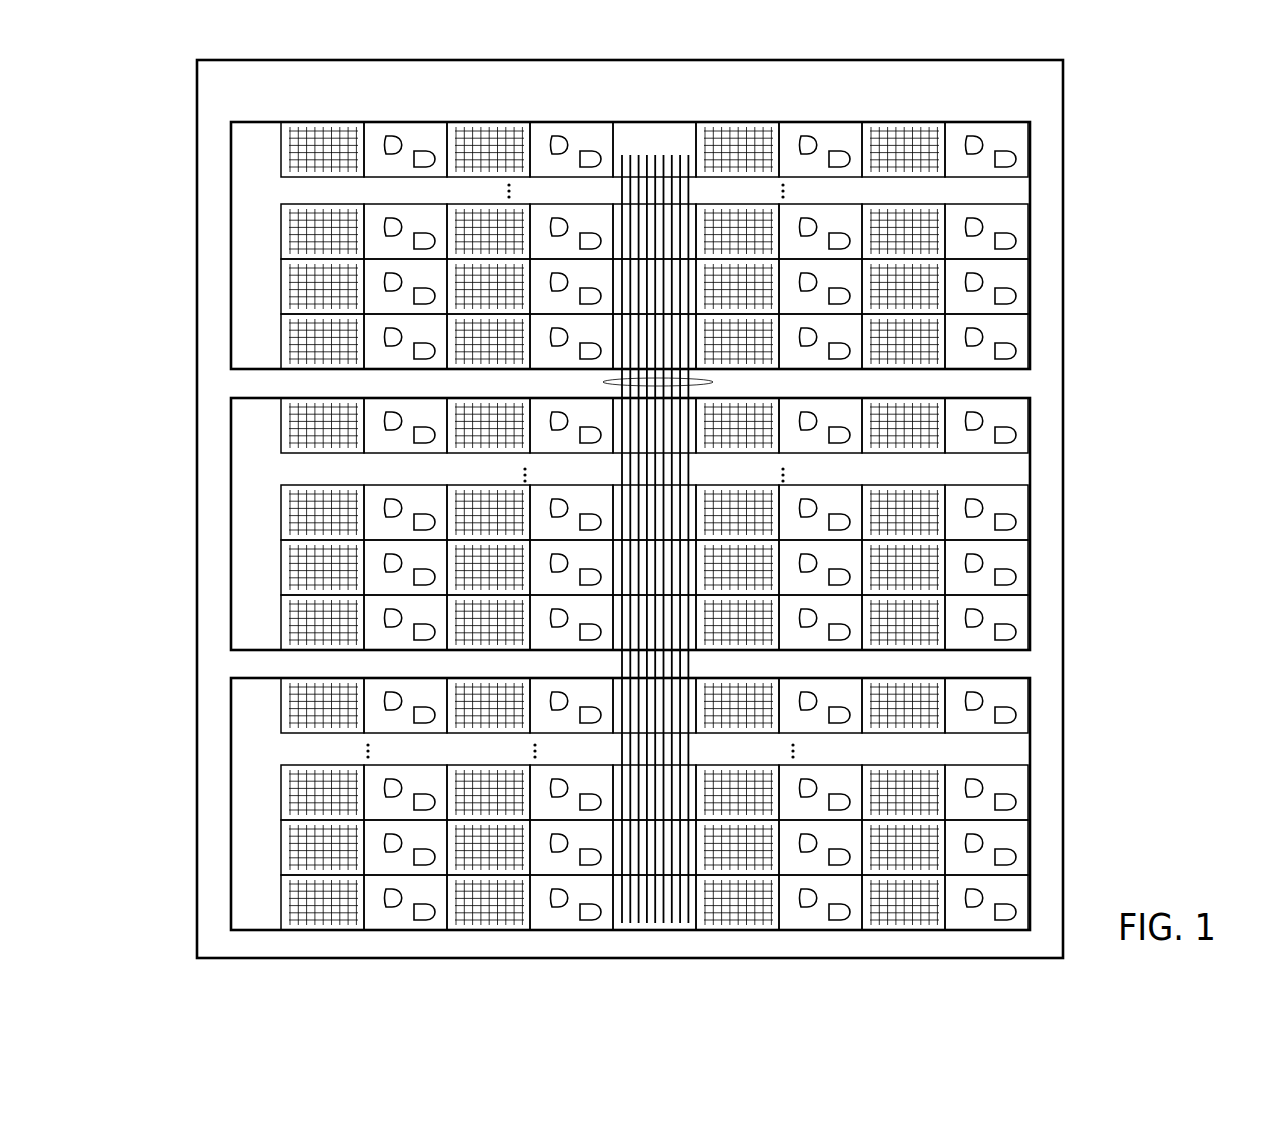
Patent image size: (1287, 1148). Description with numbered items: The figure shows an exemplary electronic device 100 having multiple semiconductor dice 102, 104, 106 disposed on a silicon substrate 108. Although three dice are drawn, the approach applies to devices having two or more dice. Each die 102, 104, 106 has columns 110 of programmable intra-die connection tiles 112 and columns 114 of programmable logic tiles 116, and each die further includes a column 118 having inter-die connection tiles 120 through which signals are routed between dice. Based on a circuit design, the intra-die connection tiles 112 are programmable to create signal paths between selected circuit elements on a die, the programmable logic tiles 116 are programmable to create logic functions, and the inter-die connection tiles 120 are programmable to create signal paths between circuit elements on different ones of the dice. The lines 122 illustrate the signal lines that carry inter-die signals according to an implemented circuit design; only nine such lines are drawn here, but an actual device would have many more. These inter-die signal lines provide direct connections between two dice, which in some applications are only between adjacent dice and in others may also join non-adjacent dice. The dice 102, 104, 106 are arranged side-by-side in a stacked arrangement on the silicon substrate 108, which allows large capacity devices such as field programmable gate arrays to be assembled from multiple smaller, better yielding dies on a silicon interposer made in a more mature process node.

The electronic device 100 is at (197, 61).
The semiconductor die 102 is at (268, 253).
The semiconductor die 104 is at (268, 529).
The semiconductor die 106 is at (268, 813).
The silicon substrate 108 is at (214, 390).
The columns of programmable intra-die connection tiles 110 is at (332, 107).
The programmable intra-die connection tile 112 is at (281, 150).
The columns of programmable logic tiles 114 is at (419, 107).
The programmable logic tile 116 is at (1030, 150).
The column of inter-die connection tiles 118 is at (665, 107).
The inter-die connection tile 120 is at (622, 212).
The inter-die signal lines 122 is at (603, 381).